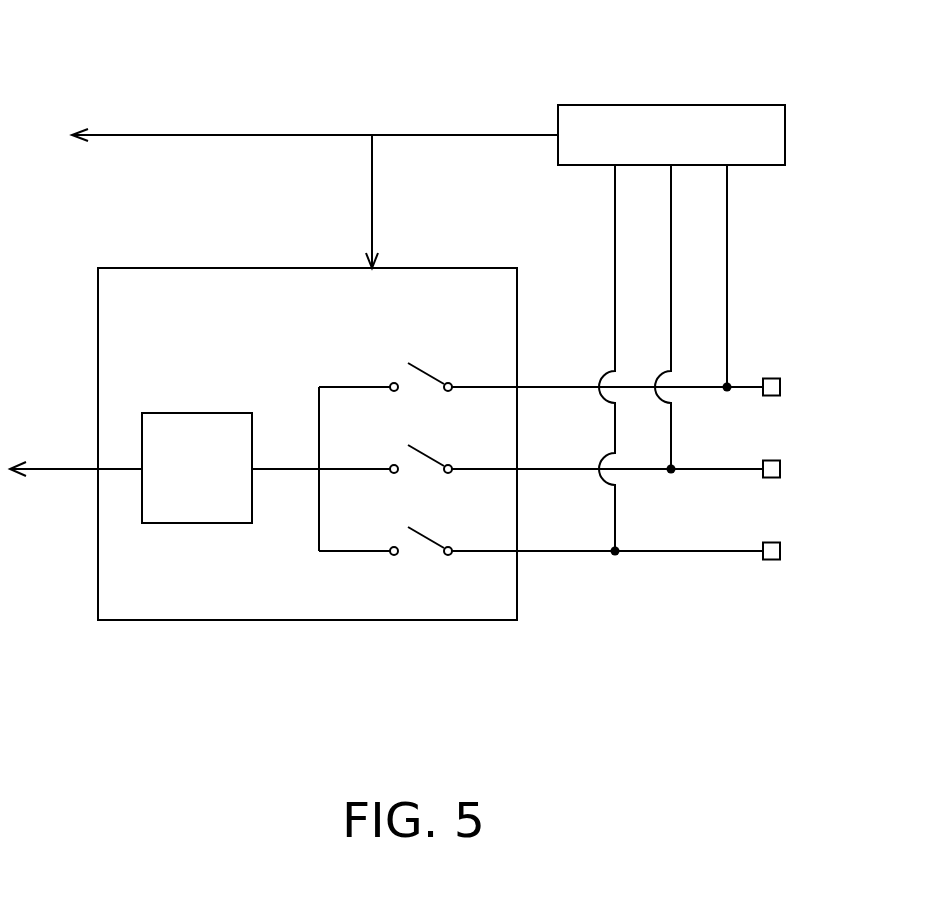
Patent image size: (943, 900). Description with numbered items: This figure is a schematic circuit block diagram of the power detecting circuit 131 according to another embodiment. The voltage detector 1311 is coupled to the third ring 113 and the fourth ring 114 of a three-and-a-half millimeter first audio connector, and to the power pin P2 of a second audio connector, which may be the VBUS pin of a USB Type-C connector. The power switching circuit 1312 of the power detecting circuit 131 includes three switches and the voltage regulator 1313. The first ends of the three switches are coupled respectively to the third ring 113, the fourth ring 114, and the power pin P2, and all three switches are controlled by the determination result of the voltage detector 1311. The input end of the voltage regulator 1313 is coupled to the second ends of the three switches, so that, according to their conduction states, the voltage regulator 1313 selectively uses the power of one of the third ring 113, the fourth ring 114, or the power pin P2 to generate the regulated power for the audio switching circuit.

The power detecting circuit 131 is at (435, 361).
The voltage detector 1311 is at (658, 105).
The power switching circuit 1312 is at (430, 268).
The voltage regulator 1313 is at (197, 523).
The third ring 113 is at (780, 387).
The fourth ring 114 is at (780, 469).
The power pin P2 is at (780, 551).